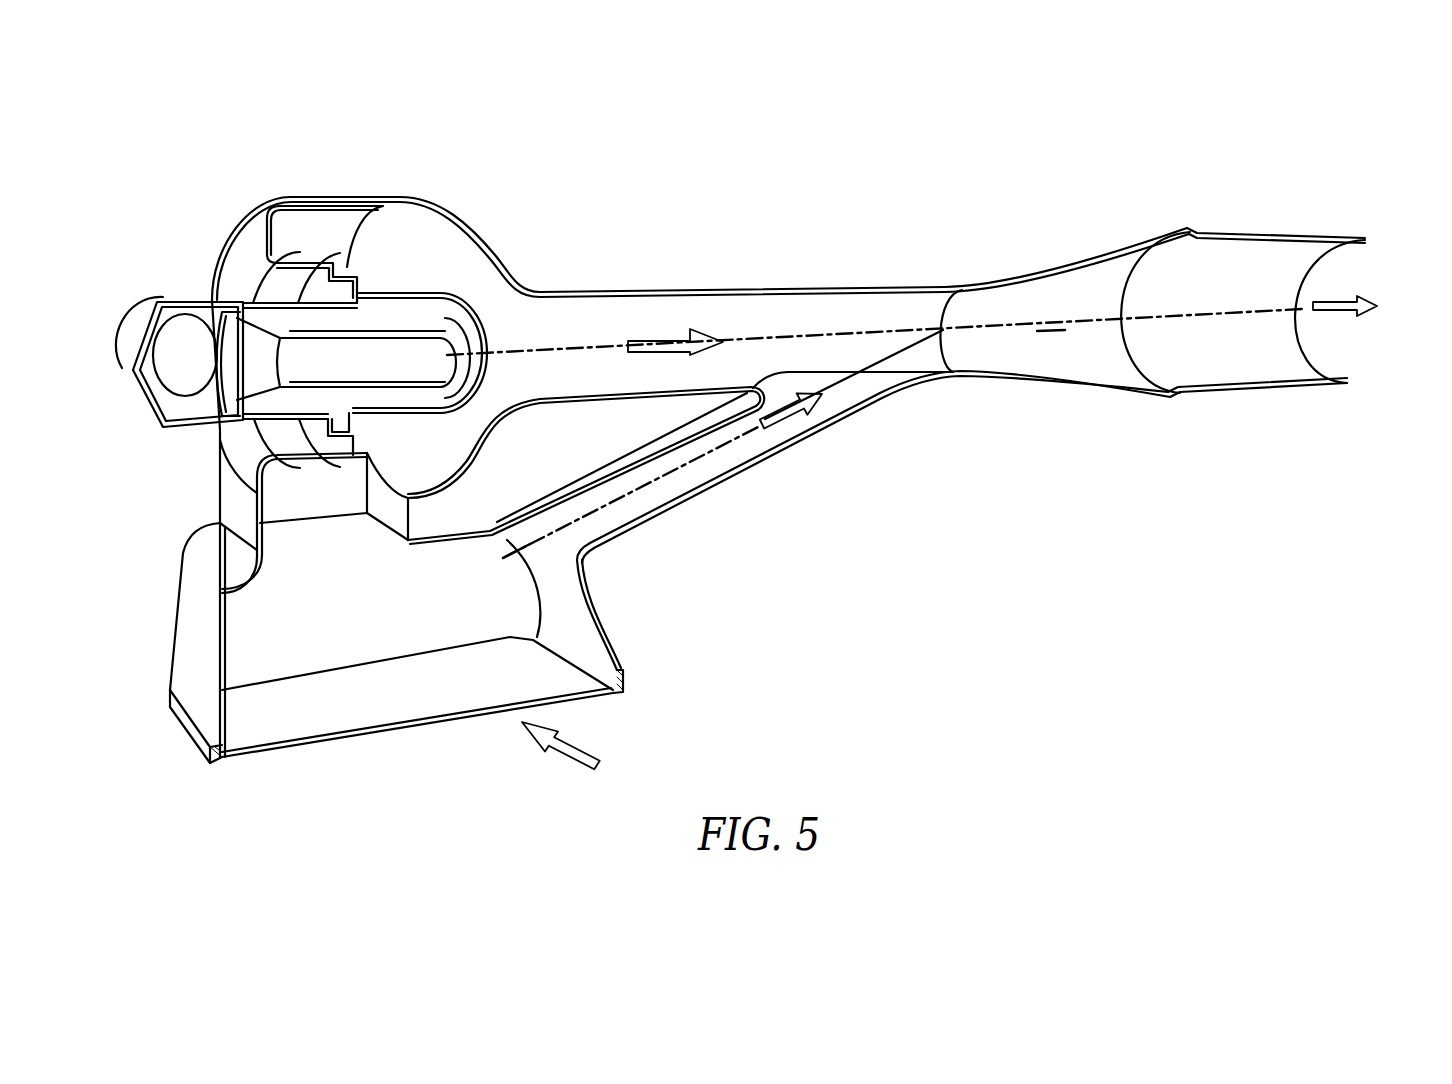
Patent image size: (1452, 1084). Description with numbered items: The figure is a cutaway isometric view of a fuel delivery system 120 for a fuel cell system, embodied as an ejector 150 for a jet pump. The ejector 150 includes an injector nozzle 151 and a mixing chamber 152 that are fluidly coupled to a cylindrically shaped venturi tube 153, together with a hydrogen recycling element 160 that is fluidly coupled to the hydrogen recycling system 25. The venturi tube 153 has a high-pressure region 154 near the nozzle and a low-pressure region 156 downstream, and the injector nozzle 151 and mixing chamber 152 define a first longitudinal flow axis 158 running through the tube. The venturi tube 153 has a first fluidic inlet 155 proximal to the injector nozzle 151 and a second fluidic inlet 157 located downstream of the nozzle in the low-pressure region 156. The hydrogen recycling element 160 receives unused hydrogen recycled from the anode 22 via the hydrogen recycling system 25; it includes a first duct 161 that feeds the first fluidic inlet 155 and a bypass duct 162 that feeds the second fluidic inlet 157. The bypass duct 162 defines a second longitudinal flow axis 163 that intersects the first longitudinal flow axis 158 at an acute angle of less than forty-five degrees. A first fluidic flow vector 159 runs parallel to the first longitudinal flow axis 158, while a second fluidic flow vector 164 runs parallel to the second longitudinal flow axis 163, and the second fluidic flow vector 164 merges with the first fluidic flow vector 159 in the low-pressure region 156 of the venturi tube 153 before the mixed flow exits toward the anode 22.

The anode 22 is at (1440, 317).
The hydrogen recycling system 25 is at (697, 788).
The fuel delivery system 120 is at (133, 300).
The ejector 150 is at (685, 358).
The injector nozzle 151 is at (335, 352).
The mixing chamber 152 is at (470, 218).
The venturi tube 153 is at (728, 295).
The high-pressure region 154 is at (517, 290).
The first fluidic inlet 155 is at (385, 470).
The low-pressure region 156 is at (838, 282).
The second fluidic inlet 157 is at (797, 386).
The first longitudinal flow axis 158 is at (668, 330).
The first fluidic flow vector 159 is at (1050, 323).
The hydrogen recycling element 160 is at (415, 690).
The first duct 161 is at (280, 585).
The bypass duct 162 is at (580, 495).
The second longitudinal flow axis 163 is at (790, 420).
The second fluidic flow vector 164 is at (516, 551).